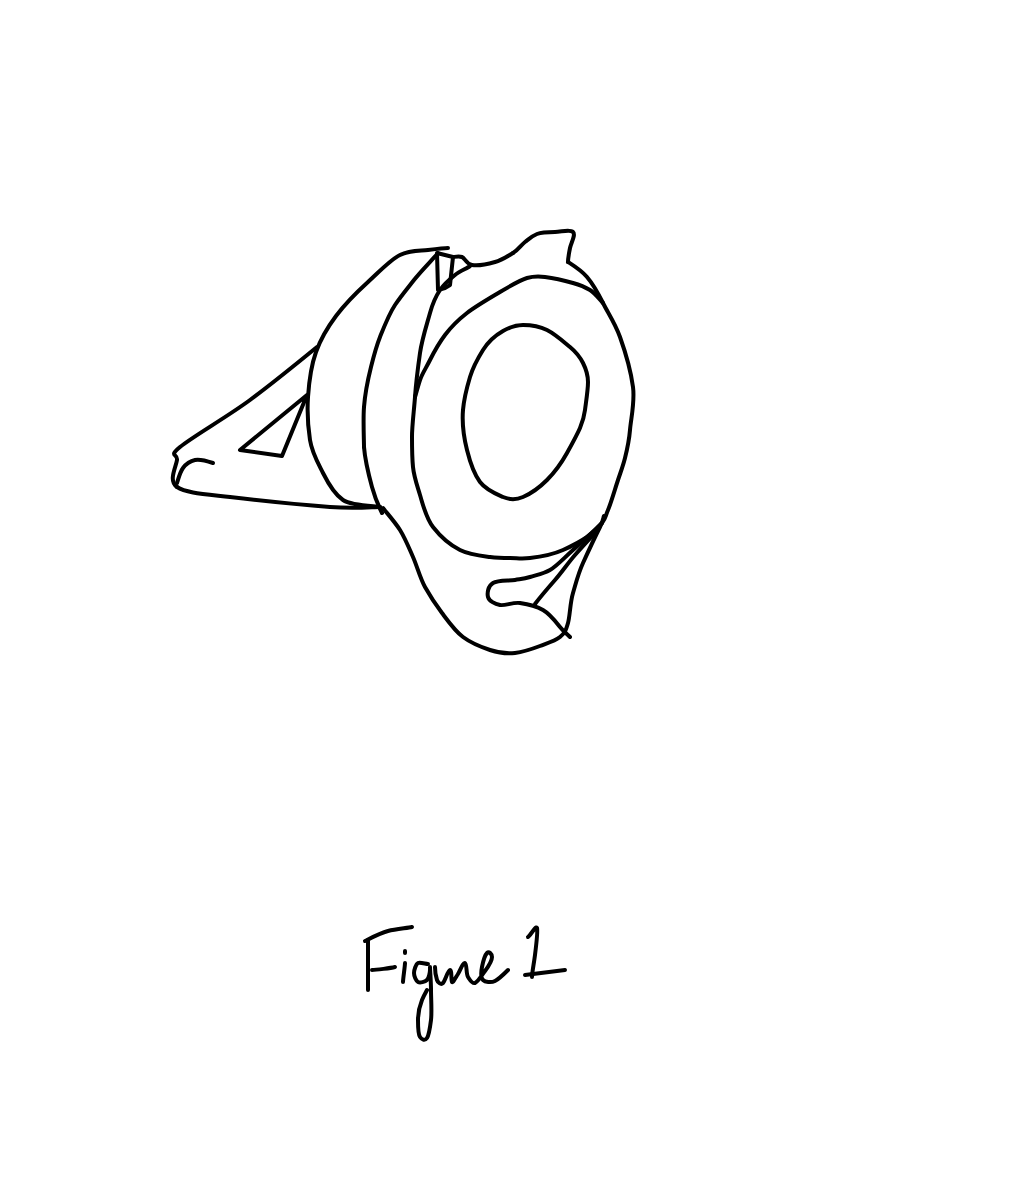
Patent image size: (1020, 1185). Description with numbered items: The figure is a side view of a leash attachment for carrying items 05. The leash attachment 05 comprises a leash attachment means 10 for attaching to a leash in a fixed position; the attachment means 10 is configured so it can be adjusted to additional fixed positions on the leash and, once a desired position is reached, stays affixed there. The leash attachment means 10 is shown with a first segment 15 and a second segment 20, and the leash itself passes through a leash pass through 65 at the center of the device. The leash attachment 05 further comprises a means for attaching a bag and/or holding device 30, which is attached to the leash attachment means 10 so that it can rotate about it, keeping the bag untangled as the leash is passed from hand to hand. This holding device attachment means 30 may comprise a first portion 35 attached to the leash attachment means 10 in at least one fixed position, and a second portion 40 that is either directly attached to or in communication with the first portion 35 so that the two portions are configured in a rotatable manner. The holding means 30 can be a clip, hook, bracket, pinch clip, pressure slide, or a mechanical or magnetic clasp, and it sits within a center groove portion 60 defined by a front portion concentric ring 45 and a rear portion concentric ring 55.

The leash attachment for carrying items 05 is at (327, 193).
The leash attachment means 10 is at (263, 407).
The first segment of leash attachment 15 is at (177, 483).
The second segment of leash attachment 20 is at (310, 470).
The means for attaching a bag and/or holding device 30 is at (540, 630).
The first portion 35 is at (447, 283).
The second portion 40 is at (562, 237).
The front portion of concentric ring 45 is at (597, 323).
The rear portion of concentric ring 55 is at (400, 270).
The center groove portion 60 is at (398, 493).
The leash pass through 65 is at (553, 410).